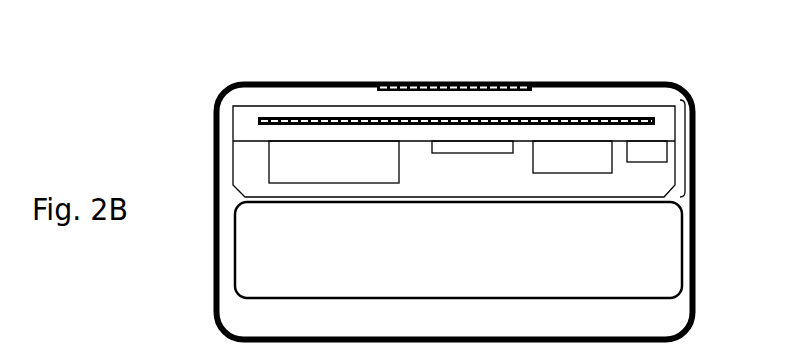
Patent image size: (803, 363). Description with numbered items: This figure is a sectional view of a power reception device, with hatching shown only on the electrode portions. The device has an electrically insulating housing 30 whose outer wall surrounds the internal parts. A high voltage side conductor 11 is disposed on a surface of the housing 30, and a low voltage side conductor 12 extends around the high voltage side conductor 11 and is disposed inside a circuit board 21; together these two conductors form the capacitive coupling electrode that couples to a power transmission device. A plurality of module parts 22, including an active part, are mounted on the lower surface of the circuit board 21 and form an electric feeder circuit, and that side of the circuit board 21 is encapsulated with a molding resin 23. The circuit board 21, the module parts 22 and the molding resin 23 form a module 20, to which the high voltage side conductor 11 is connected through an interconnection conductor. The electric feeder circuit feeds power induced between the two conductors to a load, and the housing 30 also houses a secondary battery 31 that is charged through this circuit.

The high voltage side conductor 11 is at (463, 84).
The low voltage side conductor 12 is at (576, 118).
The module 20 is at (687, 141).
The circuit board 21 is at (240, 123).
The module parts 22 is at (475, 154).
The molding resin 23 is at (240, 170).
The housing 30 is at (697, 207).
The secondary battery 31 is at (670, 248).